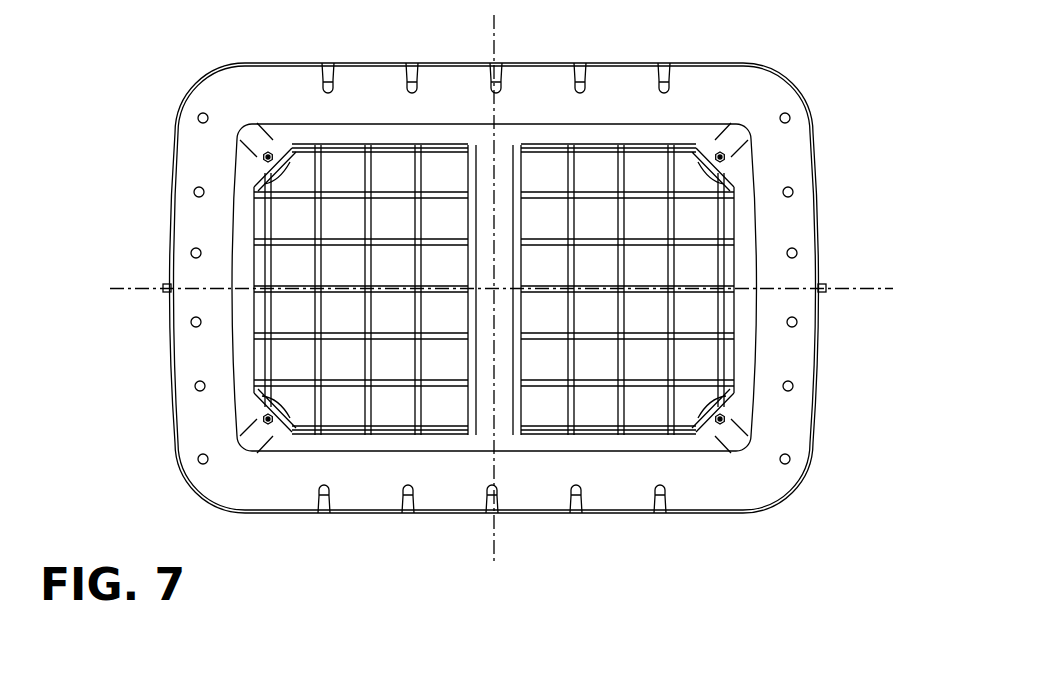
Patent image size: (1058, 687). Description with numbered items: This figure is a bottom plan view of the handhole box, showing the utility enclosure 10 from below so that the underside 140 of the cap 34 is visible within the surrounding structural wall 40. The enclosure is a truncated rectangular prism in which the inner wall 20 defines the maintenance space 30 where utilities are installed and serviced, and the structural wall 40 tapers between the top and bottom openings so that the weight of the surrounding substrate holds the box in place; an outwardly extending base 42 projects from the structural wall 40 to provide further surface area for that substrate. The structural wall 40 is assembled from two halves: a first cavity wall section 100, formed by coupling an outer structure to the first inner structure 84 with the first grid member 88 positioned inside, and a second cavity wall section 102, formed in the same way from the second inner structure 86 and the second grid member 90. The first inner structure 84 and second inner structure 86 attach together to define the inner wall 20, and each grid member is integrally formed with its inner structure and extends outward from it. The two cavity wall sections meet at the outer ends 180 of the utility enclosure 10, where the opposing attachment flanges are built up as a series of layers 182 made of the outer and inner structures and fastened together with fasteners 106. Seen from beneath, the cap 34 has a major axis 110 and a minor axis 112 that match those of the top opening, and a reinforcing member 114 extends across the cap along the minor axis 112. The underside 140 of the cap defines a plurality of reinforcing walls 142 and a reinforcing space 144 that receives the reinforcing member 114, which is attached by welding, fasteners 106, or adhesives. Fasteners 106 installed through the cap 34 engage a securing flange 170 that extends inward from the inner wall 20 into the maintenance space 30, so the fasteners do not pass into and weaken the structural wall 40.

The utility enclosure 10 is at (112, 187).
The inner wall 20 is at (647, 443).
The maintenance space 30 is at (239, 327).
The cap 34 is at (647, 138).
The structural wall 40 is at (351, 433).
The outwardly extending base 42 is at (773, 74).
The first inner structure 84 is at (340, 133).
The second inner structure 86 is at (405, 441).
The first grid member 88 is at (393, 126).
The second grid member 90 is at (572, 445).
The first cavity wall section 100 is at (174, 90).
The second cavity wall section 102 is at (176, 490).
The fasteners 106 is at (717, 432).
The major axis 110 is at (845, 287).
The minor axis 112 is at (494, 40).
The reinforcing member 114 is at (502, 197).
The underside 140 is at (705, 207).
The reinforcing walls 142 is at (708, 340).
The reinforcing space 144 is at (473, 129).
The securing flange 170 is at (725, 410).
The outer ends 180 is at (154, 277).
The layers 182 is at (823, 293).